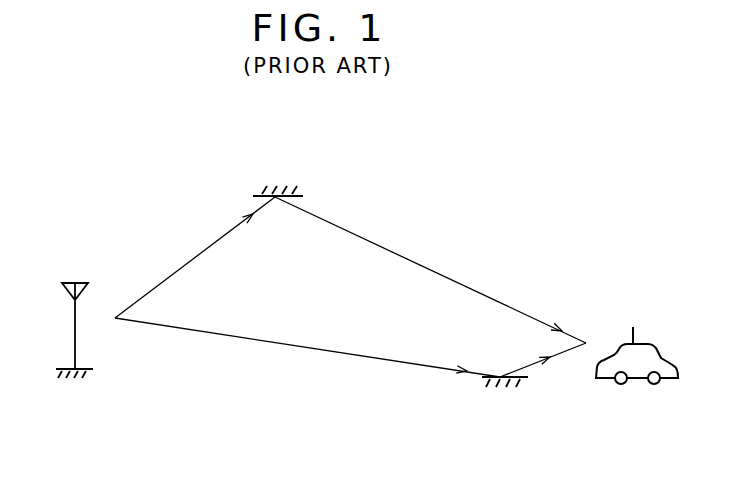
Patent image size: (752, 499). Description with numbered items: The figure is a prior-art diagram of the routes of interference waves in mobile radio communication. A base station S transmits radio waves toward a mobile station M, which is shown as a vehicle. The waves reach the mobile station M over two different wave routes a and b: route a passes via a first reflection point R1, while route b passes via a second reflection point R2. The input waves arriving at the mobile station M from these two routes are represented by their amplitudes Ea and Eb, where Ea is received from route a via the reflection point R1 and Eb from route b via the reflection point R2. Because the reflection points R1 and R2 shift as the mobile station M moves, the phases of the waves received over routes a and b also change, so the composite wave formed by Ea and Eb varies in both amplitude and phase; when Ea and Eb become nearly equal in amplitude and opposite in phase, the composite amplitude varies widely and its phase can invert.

The base station S is at (74, 343).
The first reflection point R1 is at (278, 174).
The second reflection point R2 is at (505, 400).
The first wave route a is at (195, 257).
The second wave route b is at (307, 347).
The amplitude of input wave via route a Ea is at (434, 270).
The amplitude of input wave via route b Eb is at (543, 369).
The mobile station M is at (676, 367).